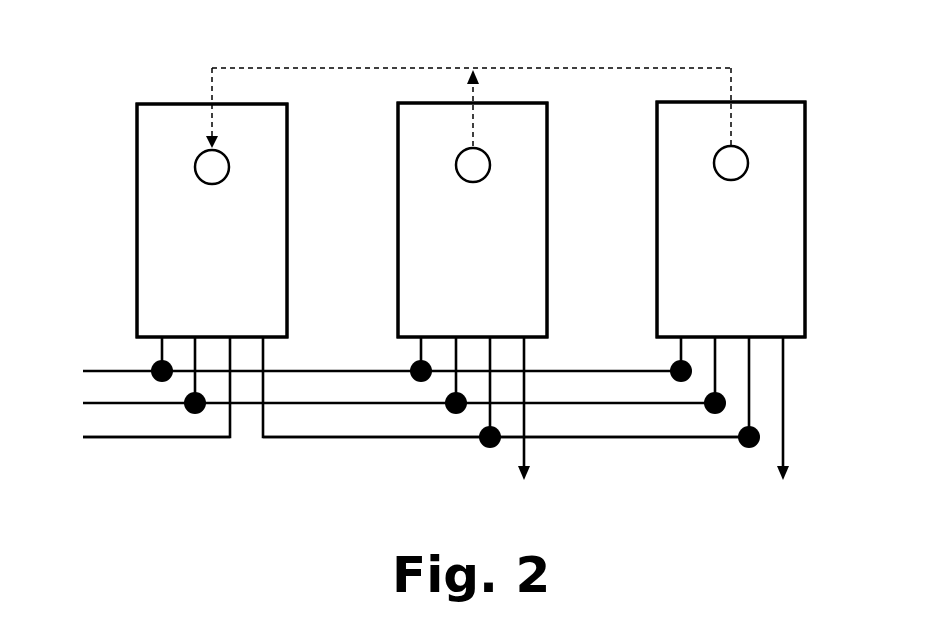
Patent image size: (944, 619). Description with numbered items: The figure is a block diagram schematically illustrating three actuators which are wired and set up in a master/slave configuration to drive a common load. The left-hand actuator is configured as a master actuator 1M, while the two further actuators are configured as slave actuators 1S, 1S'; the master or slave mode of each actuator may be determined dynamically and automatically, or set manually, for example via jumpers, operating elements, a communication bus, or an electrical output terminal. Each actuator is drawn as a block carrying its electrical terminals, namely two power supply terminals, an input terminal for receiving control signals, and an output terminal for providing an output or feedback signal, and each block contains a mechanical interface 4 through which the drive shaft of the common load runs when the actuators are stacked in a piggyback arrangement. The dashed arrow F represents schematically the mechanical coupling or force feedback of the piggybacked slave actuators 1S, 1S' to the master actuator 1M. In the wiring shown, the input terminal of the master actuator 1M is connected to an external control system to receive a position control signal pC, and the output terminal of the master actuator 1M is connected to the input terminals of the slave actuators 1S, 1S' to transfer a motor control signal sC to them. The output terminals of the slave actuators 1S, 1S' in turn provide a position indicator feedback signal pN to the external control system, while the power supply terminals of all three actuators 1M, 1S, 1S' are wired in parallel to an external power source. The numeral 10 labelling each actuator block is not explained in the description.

The control module / device 10 is at (138, 296).
The mechanical interface 4 is at (205, 170).
The arrow F is at (300, 65).
The master actuator 1M is at (126, 241).
The slave actuator 1S is at (432, 220).
The slave actuator 1S' is at (690, 219).
The position control signal pC is at (132, 442).
The motor control signal sC is at (316, 440).
The position indicator signal pN is at (657, 422).